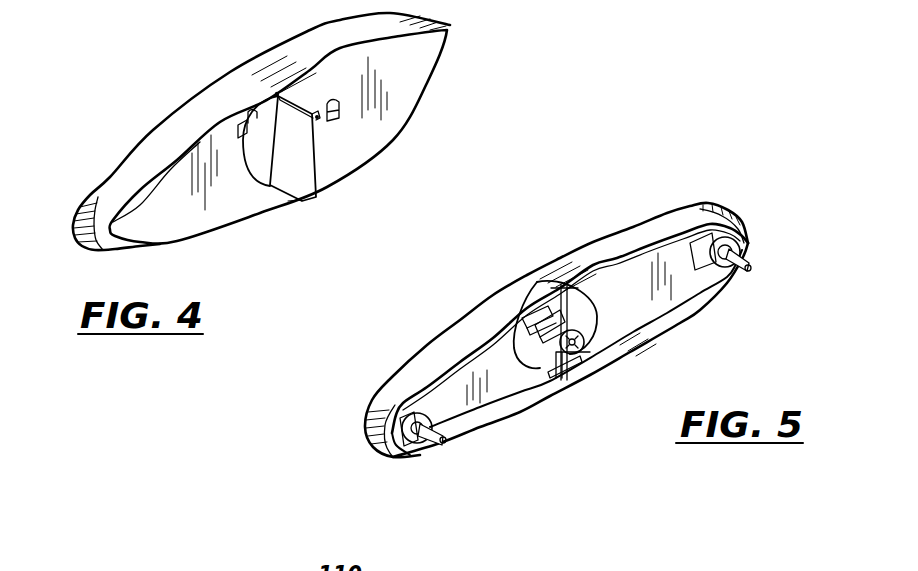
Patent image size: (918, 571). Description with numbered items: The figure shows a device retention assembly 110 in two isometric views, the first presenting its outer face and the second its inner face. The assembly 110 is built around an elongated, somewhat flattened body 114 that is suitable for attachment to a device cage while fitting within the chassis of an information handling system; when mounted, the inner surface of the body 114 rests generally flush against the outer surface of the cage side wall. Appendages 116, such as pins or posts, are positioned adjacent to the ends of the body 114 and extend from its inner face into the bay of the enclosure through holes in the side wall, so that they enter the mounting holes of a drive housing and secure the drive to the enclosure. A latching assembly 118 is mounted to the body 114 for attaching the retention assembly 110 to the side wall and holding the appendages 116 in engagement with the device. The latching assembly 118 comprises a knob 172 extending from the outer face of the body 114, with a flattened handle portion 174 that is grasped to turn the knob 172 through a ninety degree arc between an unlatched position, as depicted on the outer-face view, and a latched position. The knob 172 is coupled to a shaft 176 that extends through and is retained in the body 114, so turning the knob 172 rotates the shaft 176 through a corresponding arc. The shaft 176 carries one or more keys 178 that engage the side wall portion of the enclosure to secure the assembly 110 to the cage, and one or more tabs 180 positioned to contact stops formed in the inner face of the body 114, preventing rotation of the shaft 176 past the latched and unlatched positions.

In FIG. 4, the device retention assembly 110 is at (196, 44).
In FIG. 5, the device retention assembly 110 is at (705, 182).
In FIG. 4, the body 114 is at (405, 80).
In FIG. 5, the body 114 is at (607, 243).
In FIG. 5, the appendage 116 is at (752, 266).
In FIG. 5, the latching assembly 118 is at (567, 382).
In FIG. 4, the knob 172 is at (283, 163).
In FIG. 4, the handle portion 174 is at (292, 201).
In FIG. 5, the shaft 176 is at (556, 331).
In FIG. 5, the key 178 is at (583, 322).
In FIG. 5, the tab 180 is at (547, 327).